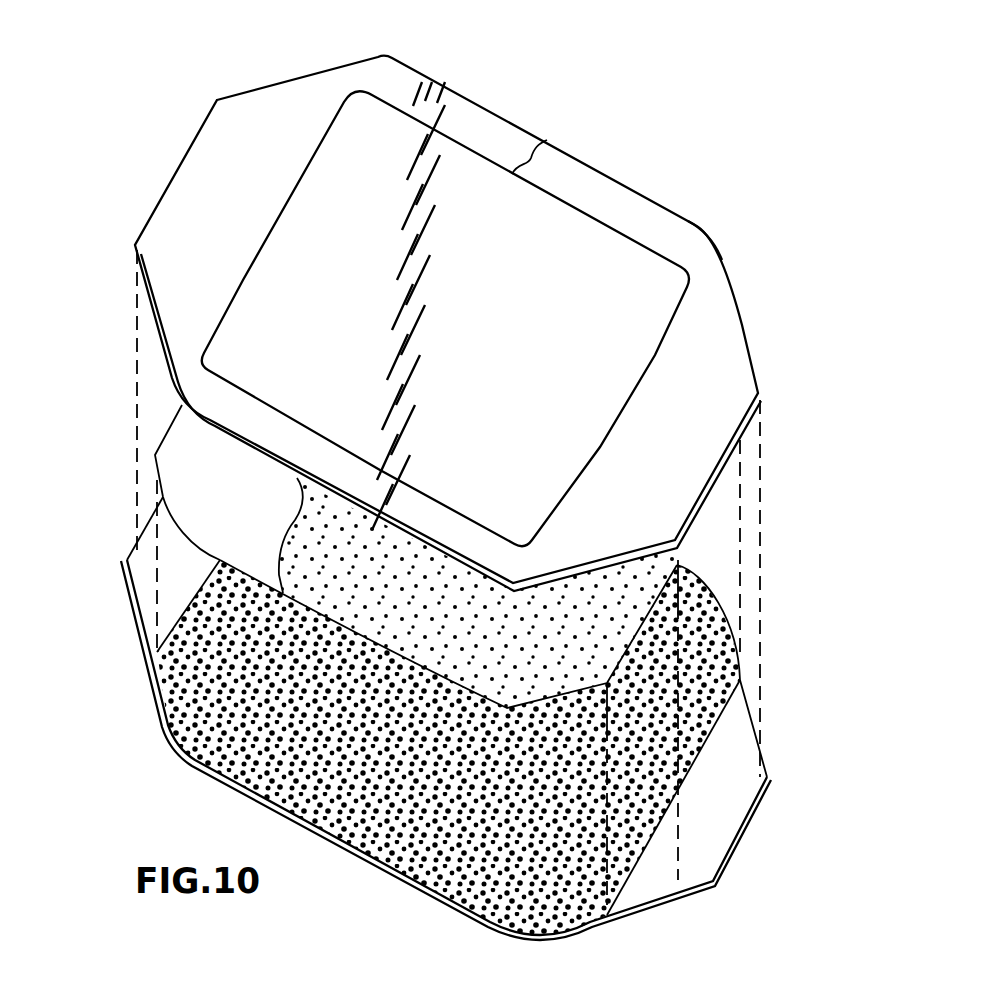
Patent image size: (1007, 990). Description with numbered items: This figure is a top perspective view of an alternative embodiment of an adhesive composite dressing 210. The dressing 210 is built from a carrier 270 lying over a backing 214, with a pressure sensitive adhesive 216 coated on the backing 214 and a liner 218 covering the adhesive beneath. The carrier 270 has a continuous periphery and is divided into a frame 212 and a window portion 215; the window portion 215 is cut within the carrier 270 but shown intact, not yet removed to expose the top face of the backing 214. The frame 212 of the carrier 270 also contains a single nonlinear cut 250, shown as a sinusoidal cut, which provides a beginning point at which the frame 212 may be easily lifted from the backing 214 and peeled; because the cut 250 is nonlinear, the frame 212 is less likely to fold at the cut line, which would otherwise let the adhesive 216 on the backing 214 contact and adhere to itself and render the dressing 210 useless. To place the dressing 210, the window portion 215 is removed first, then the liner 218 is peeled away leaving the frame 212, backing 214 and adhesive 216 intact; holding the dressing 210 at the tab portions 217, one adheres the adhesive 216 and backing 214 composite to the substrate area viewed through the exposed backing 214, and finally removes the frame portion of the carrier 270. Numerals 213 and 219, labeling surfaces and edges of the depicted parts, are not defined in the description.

The dressing 210 is at (124, 151).
The frame 212 is at (165, 232).
The interior surface 213 is at (500, 652).
The backing 214 is at (183, 476).
The window portion 215 is at (372, 142).
The pressure sensitive adhesive 216 is at (185, 695).
The tab portions 217 is at (220, 138).
The liner 218 is at (673, 923).
The side wall edge 219 is at (133, 572).
The nonlinear cut 250 is at (543, 147).
The carrier 270 is at (695, 243).